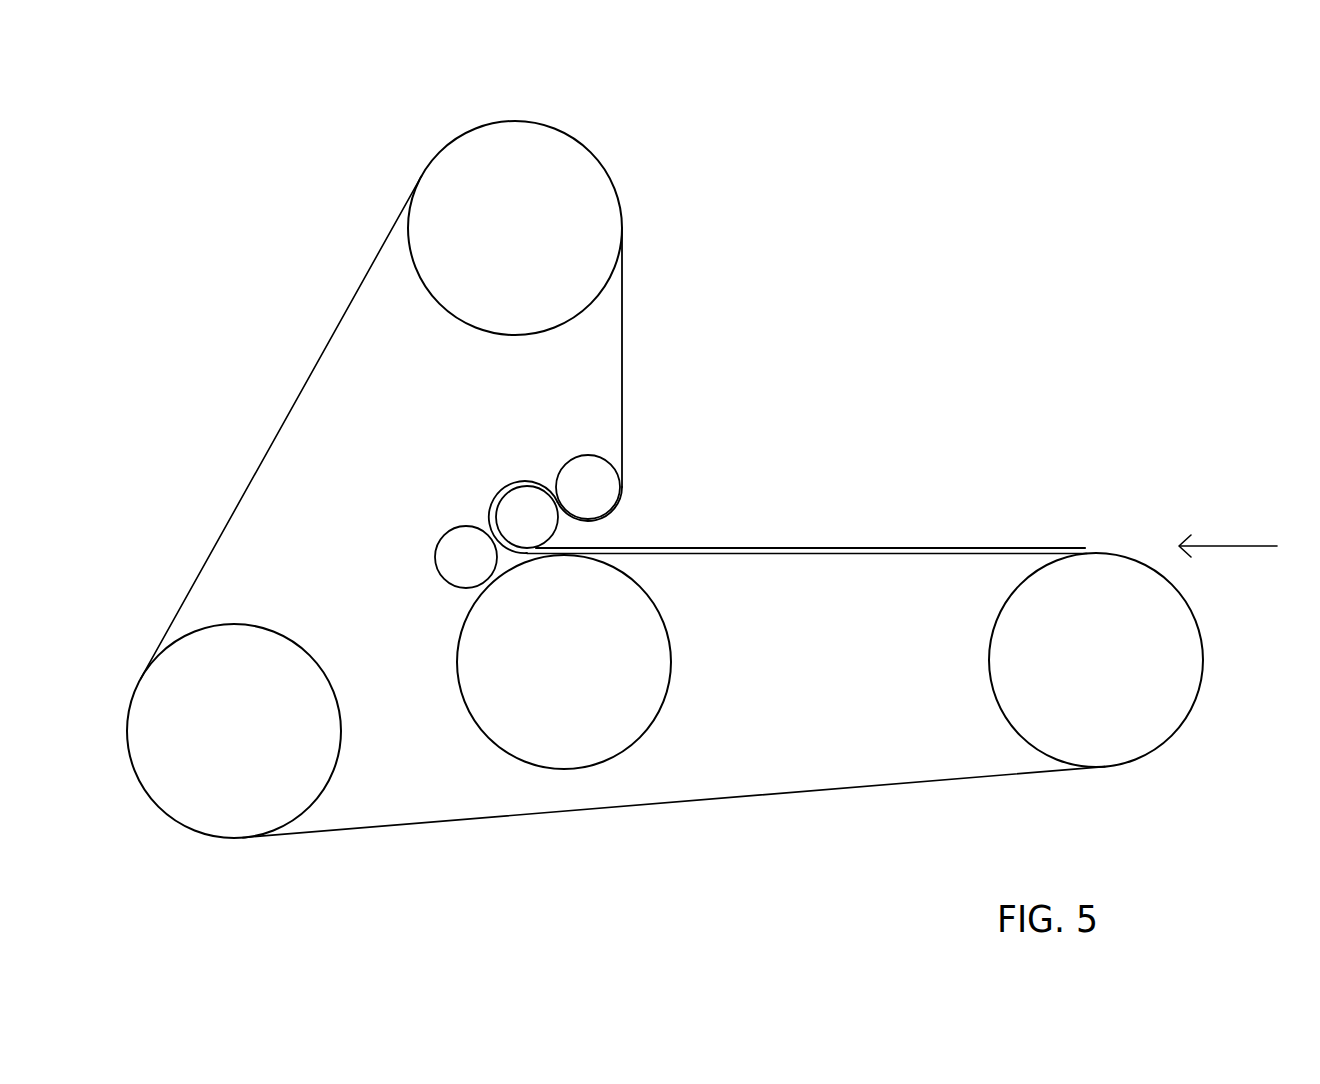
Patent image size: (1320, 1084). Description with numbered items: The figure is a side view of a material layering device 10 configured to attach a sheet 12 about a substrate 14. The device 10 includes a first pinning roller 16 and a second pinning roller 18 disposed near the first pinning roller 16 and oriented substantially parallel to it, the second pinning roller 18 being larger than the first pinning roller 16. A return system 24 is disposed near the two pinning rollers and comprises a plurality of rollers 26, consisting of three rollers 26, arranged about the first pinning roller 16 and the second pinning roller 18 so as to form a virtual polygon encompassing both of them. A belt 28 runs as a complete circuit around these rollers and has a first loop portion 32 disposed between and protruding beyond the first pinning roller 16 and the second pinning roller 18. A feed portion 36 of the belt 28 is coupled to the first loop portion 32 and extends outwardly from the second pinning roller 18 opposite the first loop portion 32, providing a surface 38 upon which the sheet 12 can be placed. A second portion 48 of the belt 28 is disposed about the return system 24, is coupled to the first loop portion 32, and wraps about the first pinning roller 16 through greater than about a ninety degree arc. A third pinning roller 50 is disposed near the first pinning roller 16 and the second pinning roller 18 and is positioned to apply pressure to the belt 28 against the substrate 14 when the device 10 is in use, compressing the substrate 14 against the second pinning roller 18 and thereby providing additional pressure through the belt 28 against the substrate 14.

The material layering device 10 is at (945, 176).
The sheet 12 is at (738, 548).
The substrate 14 is at (542, 531).
The first pinning roller 16 is at (597, 499).
The second pinning roller 18 is at (574, 664).
The return system 24 is at (648, 357).
The rollers 26 is at (521, 226).
The belt 28 is at (738, 799).
The first loop portion 32 is at (510, 463).
The feed portion 36 is at (719, 522).
The surface 38 is at (786, 554).
The second portion 48 is at (639, 470).
The third pinning roller 50 is at (480, 569).